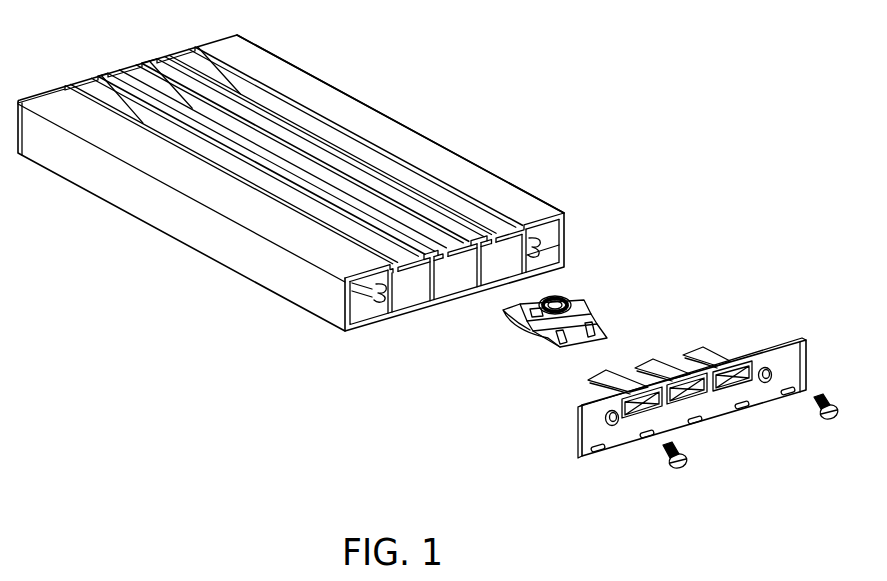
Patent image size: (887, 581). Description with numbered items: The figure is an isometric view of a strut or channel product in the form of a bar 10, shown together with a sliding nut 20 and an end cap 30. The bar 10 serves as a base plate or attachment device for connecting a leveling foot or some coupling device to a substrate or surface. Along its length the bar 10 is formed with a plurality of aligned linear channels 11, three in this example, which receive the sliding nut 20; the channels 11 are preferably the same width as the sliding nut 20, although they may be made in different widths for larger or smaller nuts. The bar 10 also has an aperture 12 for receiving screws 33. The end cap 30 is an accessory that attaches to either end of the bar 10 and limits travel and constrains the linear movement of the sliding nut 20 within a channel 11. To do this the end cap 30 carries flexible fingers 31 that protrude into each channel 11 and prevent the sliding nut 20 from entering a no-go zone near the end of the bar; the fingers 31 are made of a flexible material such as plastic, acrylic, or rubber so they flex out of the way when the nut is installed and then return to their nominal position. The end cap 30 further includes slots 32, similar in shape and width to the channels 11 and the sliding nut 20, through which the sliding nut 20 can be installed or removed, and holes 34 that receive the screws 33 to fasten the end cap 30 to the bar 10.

The bar 10 is at (371, 92).
The channels 11 is at (438, 185).
The aperture 12 is at (392, 297).
The sliding nut 20 is at (585, 302).
The end cap 30 is at (680, 398).
The flexible fingers 31 is at (722, 352).
The slots 32 is at (694, 396).
The screws 33 is at (838, 413).
The holes 34 is at (618, 425).